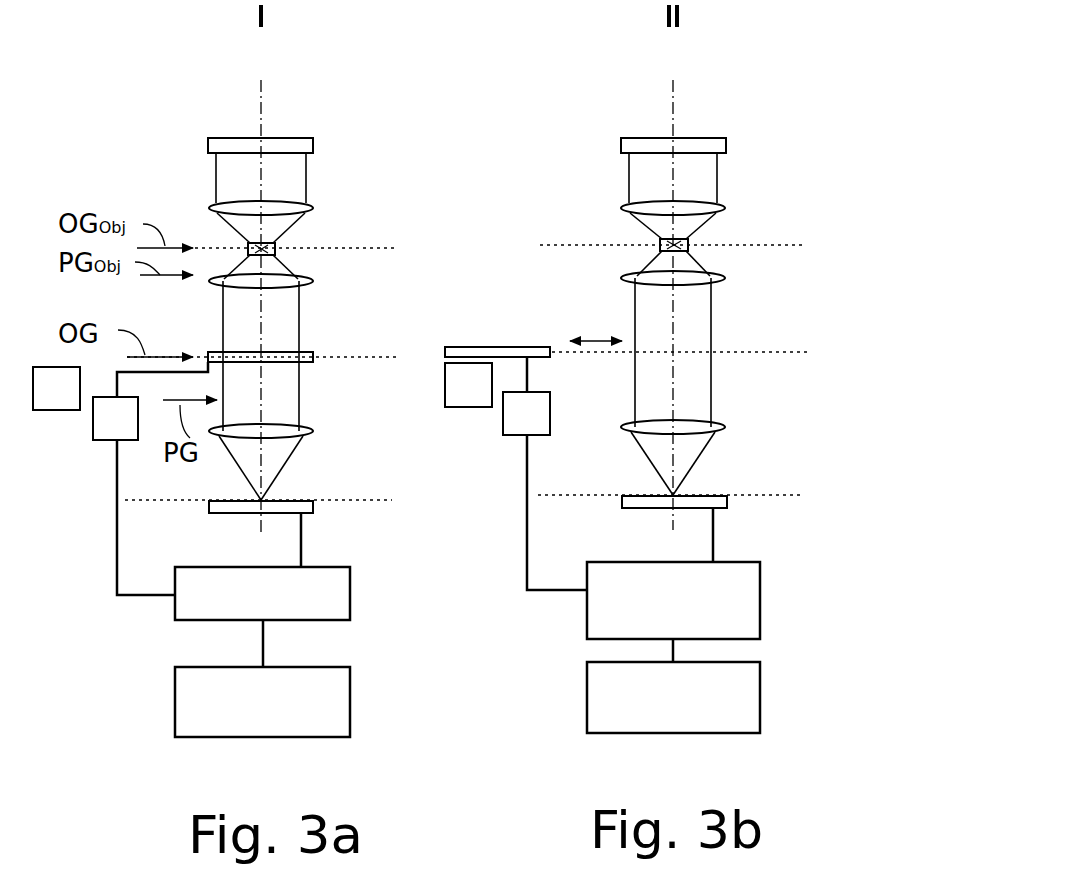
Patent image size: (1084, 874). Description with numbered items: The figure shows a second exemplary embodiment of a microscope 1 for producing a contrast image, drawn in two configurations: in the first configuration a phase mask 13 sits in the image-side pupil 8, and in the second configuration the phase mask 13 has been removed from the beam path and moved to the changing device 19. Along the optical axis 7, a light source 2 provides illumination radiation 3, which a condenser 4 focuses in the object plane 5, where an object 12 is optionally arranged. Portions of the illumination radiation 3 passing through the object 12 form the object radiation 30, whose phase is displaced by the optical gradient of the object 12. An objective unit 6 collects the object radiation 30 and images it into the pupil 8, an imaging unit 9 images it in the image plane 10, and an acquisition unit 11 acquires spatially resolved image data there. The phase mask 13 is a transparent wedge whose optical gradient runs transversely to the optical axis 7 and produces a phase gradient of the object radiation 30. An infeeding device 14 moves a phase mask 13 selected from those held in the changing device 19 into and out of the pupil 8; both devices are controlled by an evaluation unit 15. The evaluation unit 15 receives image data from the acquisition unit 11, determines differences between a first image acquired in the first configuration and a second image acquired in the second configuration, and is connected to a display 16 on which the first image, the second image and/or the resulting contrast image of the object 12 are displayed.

In FIG. 3A, the microscope 1 is at (215, 84).
In FIG. 3B, the microscope 1 is at (740, 108).
In FIG. 3A, the light source 2 is at (313, 140).
In FIG. 3B, the light source 2 is at (621, 140).
In FIG. 3A, the illumination radiation 3 is at (306, 175).
In FIG. 3B, the illumination radiation 3 is at (629, 175).
In FIG. 3A, the condenser 4 is at (313, 205).
In FIG. 3B, the condenser 4 is at (621, 205).
In FIG. 3A, the object plane 5 is at (372, 250).
In FIG. 3B, the object plane 5 is at (545, 248).
In FIG. 3A, the objective unit 6 is at (313, 283).
In FIG. 3B, the objective unit 6 is at (621, 279).
In FIG. 3A, the optical axis 7 is at (261, 110).
In FIG. 3B, the optical axis 7 is at (673, 110).
In FIG. 3A, the image-side pupil 8 is at (347, 357).
In FIG. 3B, the image-side pupil 8 is at (767, 352).
In FIG. 3A, the imaging unit 9 is at (313, 431).
In FIG. 3B, the imaging unit 9 is at (725, 427).
In FIG. 3A, the image plane 10 is at (367, 498).
In FIG. 3B, the image plane 10 is at (780, 493).
In FIG. 3A, the acquisition unit 11 is at (302, 513).
In FIG. 3B, the acquisition unit 11 is at (715, 508).
In FIG. 3A, the object 12 is at (275, 246).
In FIG. 3B, the object 12 is at (688, 242).
In FIG. 3A, the phase mask 13 is at (218, 350).
In FIG. 3B, the phase mask 13 is at (475, 347).
In FIG. 3A, the infeeding device 14 is at (115, 418).
In FIG. 3B, the infeeding device 14 is at (526, 413).
In FIG. 3A, the evaluation unit 15 is at (262, 593).
In FIG. 3B, the evaluation unit 15 is at (673, 600).
In FIG. 3A, the display 16 is at (262, 702).
In FIG. 3B, the display 16 is at (673, 697).
In FIG. 3A, the changing device 19 is at (56, 388).
In FIG. 3B, the changing device 19 is at (468, 385).
In FIG. 3A, the object radiation 30 is at (299, 393).
In FIG. 3B, the object radiation 30 is at (713, 390).